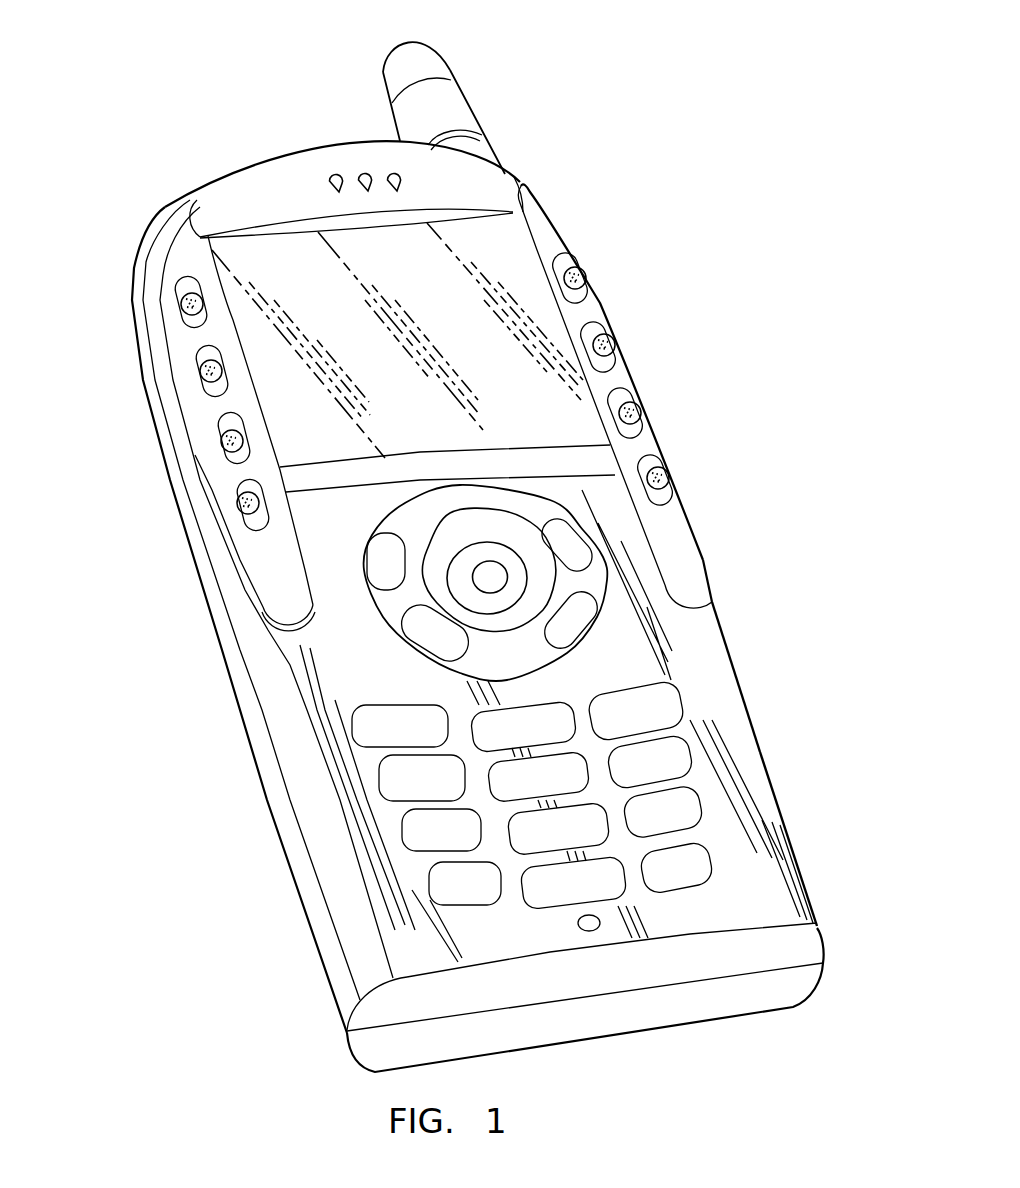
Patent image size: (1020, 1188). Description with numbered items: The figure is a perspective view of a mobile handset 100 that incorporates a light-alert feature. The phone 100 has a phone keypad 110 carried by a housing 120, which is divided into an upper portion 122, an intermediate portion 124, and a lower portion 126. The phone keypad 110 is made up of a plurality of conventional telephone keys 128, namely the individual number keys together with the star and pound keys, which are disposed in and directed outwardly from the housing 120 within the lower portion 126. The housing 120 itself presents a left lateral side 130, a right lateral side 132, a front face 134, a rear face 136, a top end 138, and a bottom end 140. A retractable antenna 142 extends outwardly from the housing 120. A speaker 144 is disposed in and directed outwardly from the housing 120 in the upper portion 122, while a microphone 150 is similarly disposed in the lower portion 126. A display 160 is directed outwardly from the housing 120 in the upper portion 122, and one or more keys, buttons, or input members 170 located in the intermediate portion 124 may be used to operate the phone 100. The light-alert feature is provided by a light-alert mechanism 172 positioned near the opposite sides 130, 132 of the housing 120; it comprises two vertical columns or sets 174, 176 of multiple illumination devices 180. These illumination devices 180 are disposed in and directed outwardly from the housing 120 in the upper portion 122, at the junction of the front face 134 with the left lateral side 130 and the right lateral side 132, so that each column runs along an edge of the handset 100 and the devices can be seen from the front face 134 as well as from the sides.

The mobile handset 100 is at (672, 112).
The phone keypad 110 is at (710, 817).
The housing 120 is at (136, 252).
The upper portion 122 is at (630, 289).
The intermediate portion 124 is at (720, 533).
The lower portion 126 is at (772, 760).
The telephone keys 128 is at (723, 867).
The left lateral side 130 is at (217, 605).
The right lateral side 132 is at (733, 667).
The front face 134 is at (343, 660).
The rear face 136 is at (327, 988).
The top end 138 is at (307, 147).
The bottom end 140 is at (543, 1030).
The retractable antenna 142 is at (448, 64).
The speaker 144 is at (368, 165).
The microphone 150 is at (597, 931).
The display 160 is at (238, 224).
The input members 170 is at (427, 630).
The light-alert mechanism 172 is at (130, 352).
The first vertical column of illumination devices 174 is at (187, 262).
The second vertical column of illumination devices 176 is at (547, 243).
The illumination devices 180 is at (220, 432).